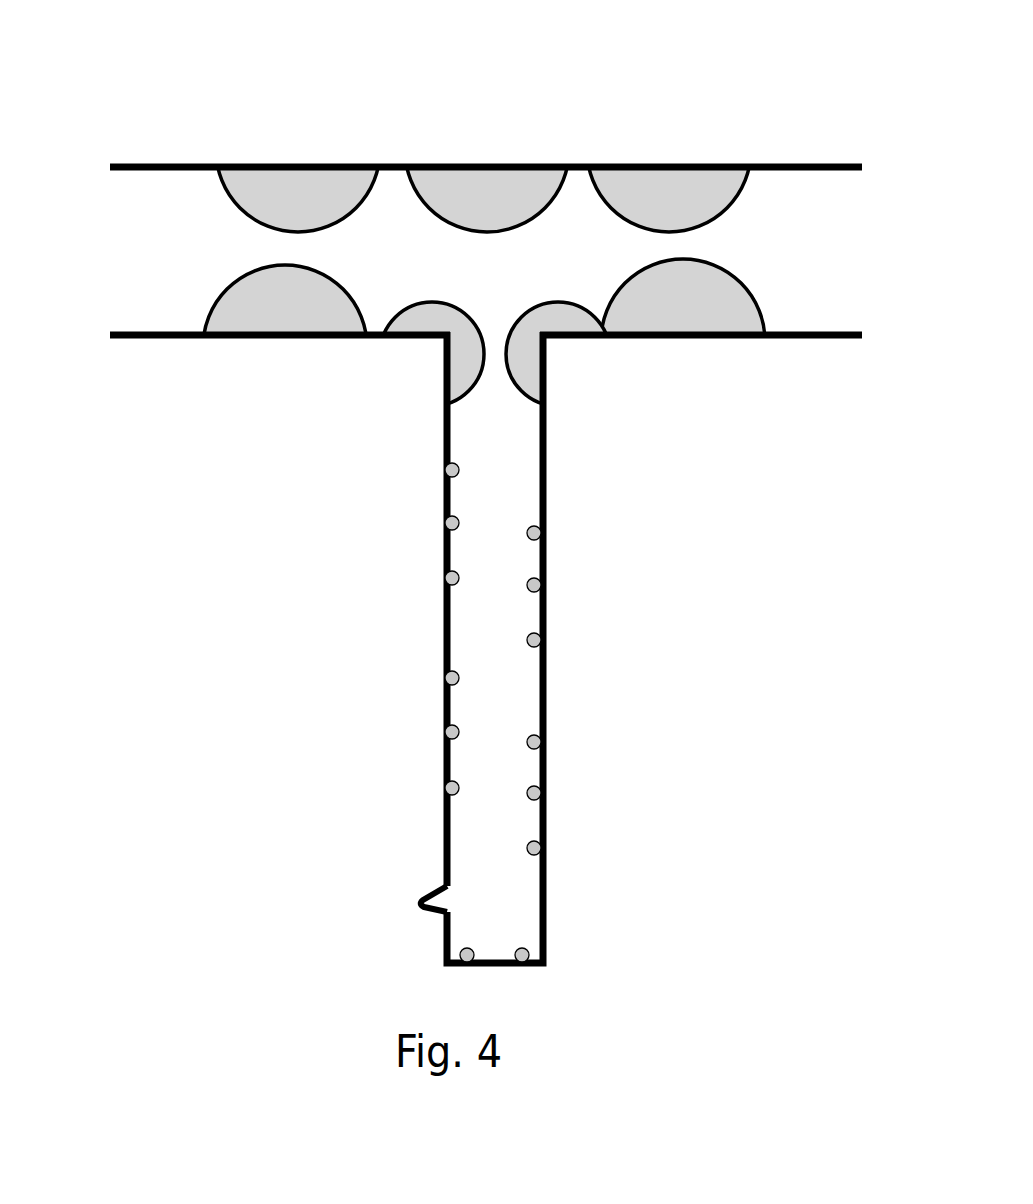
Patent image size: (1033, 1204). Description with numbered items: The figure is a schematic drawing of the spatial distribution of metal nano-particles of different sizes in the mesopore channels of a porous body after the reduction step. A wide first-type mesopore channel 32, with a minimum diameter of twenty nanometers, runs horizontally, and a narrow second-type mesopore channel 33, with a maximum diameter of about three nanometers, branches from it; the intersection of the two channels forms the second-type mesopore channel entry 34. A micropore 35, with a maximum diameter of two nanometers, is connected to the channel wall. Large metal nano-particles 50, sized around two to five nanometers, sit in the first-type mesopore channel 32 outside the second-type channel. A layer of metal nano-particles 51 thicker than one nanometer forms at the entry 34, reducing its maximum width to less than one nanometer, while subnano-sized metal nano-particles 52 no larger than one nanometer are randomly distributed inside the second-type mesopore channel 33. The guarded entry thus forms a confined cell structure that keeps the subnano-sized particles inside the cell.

The first-type mesopore channel 32 is at (108, 278).
The second-type mesopore channel 33 is at (507, 617).
The second-type mesopore channel entry 34 is at (495, 325).
The micropore 35 is at (398, 905).
The metal nano-particles 50 is at (305, 185).
The layer of metal nano-particles 51 is at (525, 370).
The subnano-sized metal nano-particles 52 is at (533, 793).